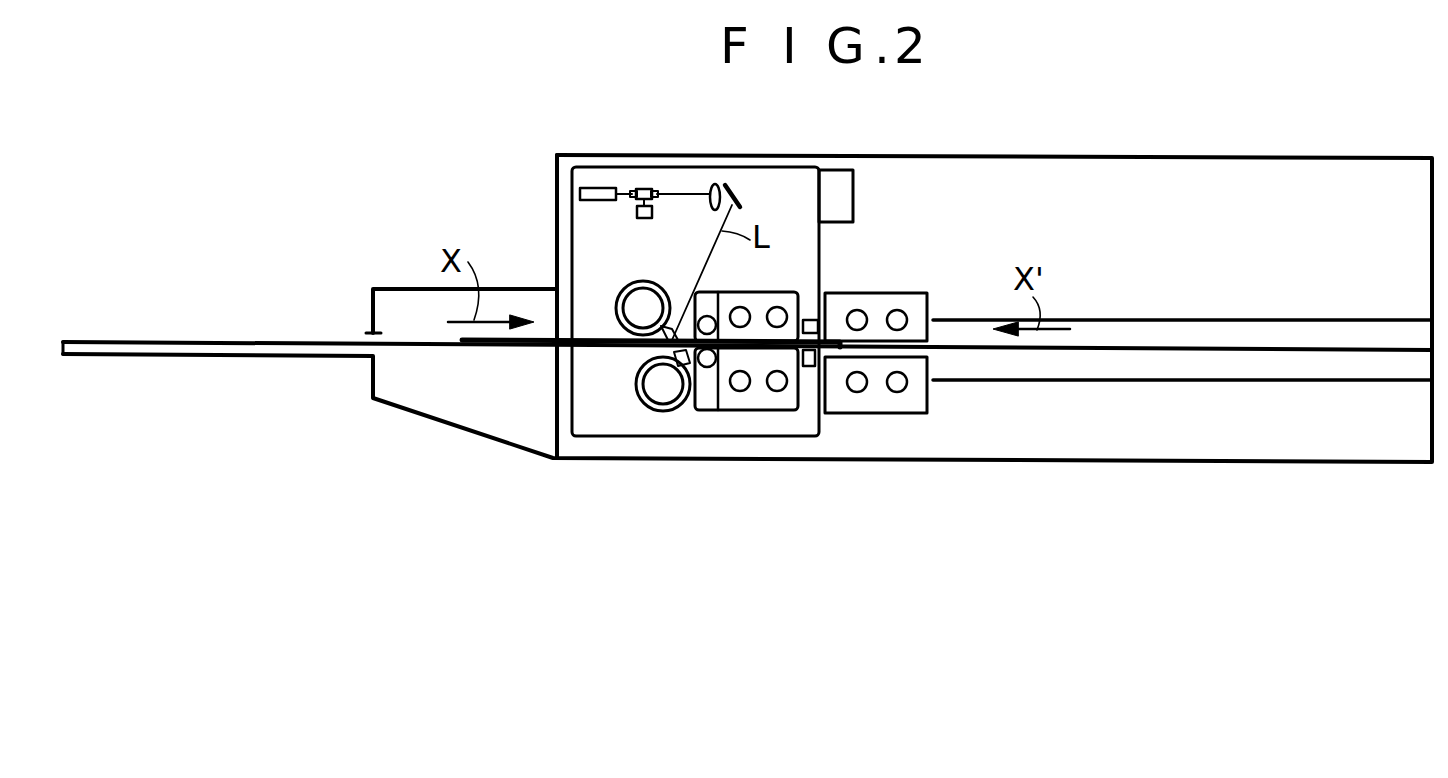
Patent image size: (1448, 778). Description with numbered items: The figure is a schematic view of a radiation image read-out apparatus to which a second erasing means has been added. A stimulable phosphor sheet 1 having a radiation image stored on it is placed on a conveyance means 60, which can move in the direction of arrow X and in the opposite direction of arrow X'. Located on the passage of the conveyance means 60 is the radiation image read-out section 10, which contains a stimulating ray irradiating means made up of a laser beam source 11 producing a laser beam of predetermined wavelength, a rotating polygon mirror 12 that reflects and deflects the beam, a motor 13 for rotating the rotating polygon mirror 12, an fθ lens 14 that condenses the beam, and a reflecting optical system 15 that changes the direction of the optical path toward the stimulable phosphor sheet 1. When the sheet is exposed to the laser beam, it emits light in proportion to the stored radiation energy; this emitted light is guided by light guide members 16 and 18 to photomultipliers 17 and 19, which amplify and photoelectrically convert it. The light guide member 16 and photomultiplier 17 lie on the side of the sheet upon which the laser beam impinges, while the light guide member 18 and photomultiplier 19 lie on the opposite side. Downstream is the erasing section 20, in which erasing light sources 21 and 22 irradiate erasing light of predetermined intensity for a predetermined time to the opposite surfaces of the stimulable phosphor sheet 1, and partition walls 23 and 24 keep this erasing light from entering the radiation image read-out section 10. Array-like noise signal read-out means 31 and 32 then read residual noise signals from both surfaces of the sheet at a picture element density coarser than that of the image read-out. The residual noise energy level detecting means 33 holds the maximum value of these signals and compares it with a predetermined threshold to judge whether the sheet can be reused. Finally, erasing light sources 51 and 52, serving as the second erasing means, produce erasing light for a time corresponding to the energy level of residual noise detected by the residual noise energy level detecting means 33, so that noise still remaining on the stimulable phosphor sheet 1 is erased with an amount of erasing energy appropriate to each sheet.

The stimulable phosphor sheet 1 is at (466, 347).
The radiation image read-out section 10 is at (590, 290).
The laser beam source 11 is at (602, 188).
The rotating polygon mirror 12 is at (647, 189).
The motor 13 is at (656, 212).
The fθ lens 14 is at (715, 184).
The reflecting optical system 15 is at (745, 197).
The light guide member 16 is at (684, 347).
The photomultiplier 17 is at (617, 314).
The light guide member 18 is at (662, 381).
The photomultiplier 19 is at (641, 417).
The erasing section 20 is at (791, 425).
The erasing light source 21 is at (781, 314).
The erasing light source 22 is at (741, 392).
The partition wall 23 is at (718, 292).
The partition wall 24 is at (712, 412).
The noise signal read-out means 31 is at (818, 322).
The noise signal read-out means 32 is at (805, 367).
The residual noise energy level detecting means 33 is at (837, 201).
The erasing light source 51 is at (907, 318).
The erasing light source 52 is at (905, 386).
The conveyance means 60 is at (298, 341).